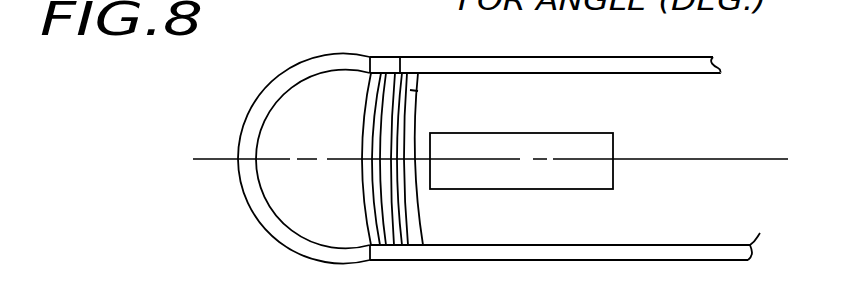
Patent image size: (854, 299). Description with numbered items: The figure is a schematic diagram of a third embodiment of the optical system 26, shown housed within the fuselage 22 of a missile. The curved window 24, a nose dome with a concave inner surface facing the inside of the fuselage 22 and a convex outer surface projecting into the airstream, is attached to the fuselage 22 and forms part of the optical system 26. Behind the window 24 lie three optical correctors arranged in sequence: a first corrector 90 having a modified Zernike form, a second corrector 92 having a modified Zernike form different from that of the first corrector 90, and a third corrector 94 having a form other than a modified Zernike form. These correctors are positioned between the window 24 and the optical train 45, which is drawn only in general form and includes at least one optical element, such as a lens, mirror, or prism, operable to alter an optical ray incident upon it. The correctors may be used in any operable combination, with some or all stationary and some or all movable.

The fuselage 22 is at (565, 57).
The window 24 is at (262, 118).
The optical system 26 is at (286, 84).
The optical train 45 is at (534, 133).
The first corrector 90 is at (366, 130).
The second corrector 92 is at (393, 84).
The third corrector 94 is at (410, 90).